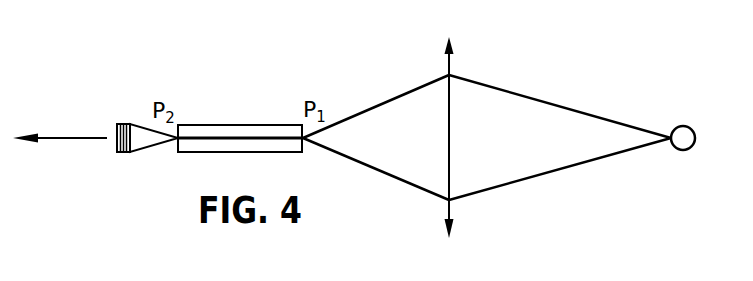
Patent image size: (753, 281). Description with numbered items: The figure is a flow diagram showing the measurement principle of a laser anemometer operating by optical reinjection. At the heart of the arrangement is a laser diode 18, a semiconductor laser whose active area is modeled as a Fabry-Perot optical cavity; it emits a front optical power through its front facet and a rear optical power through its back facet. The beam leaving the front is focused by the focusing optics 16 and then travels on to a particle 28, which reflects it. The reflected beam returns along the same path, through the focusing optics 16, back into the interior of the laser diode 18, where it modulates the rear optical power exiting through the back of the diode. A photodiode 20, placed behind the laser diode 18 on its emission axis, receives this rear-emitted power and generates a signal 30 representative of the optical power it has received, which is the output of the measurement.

The focusing optics 16 is at (449, 125).
The laser diode 18 is at (274, 124).
The photodiode 20 is at (120, 124).
The particle 28 is at (682, 137).
The signal 30 is at (52, 136).